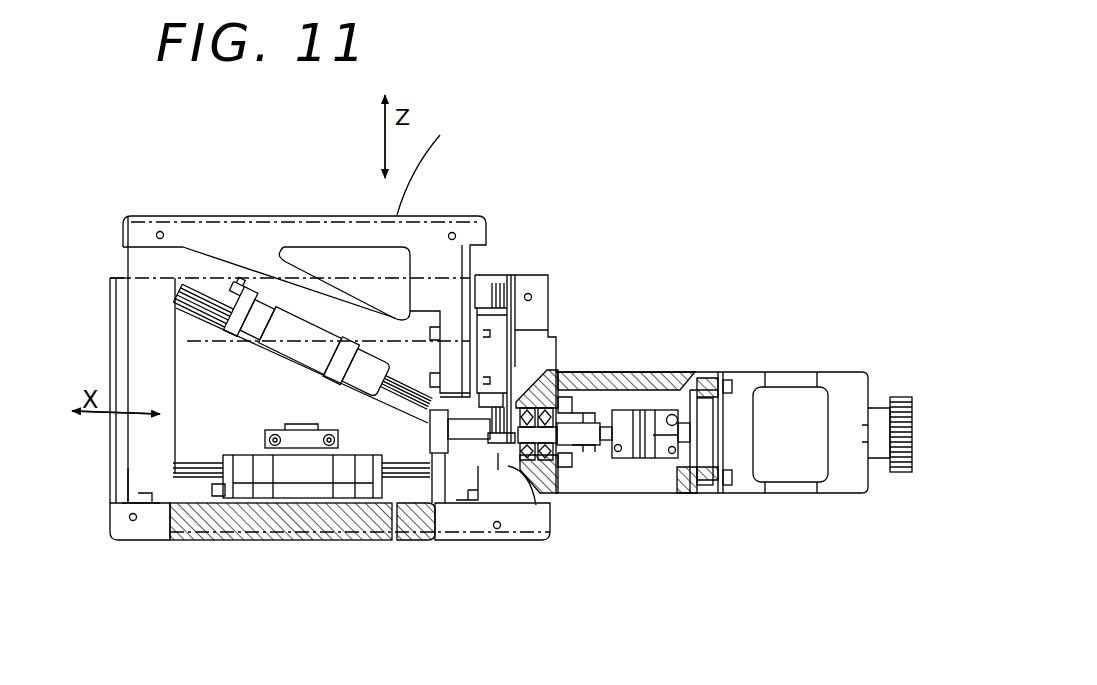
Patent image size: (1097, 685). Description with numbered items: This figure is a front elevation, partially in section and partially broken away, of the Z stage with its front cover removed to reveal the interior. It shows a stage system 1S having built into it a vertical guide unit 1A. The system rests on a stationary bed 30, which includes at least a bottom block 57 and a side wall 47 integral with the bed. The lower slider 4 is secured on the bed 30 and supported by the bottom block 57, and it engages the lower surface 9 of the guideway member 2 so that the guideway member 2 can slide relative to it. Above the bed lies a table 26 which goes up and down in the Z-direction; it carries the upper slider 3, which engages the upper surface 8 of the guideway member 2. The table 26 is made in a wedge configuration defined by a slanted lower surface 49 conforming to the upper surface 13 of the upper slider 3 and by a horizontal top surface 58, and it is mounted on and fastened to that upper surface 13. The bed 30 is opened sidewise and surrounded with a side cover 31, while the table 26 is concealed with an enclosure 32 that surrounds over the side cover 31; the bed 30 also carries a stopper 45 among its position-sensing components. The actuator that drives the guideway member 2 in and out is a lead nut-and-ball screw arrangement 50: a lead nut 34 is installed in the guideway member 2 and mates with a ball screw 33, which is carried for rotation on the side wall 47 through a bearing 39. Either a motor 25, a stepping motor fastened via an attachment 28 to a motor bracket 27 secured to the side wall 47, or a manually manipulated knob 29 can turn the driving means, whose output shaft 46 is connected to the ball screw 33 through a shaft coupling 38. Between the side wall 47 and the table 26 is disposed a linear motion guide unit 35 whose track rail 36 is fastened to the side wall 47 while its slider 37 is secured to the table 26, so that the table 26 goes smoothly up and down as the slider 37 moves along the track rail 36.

The stage system 1S is at (600, 236).
The vertical guide unit 1A is at (315, 383).
The guideway member 2 is at (204, 352).
The upper slider 3 is at (307, 284).
The lower slider 4 is at (293, 487).
The upper surface 8 is at (203, 305).
The lower surface 9 is at (400, 495).
The upper surface 13 is at (238, 286).
The motor 25 is at (797, 400).
The table 26 is at (432, 247).
The motor bracket 27 is at (625, 373).
The attachment 28 is at (707, 383).
The knob 29 is at (902, 407).
The stationary bed 30 is at (142, 530).
The side cover 31 is at (113, 370).
The enclosure 32 is at (122, 247).
The ball screw 33 is at (553, 430).
The lead nut 34 is at (438, 455).
The linear motion guide unit 35 is at (530, 335).
The track rail 36 is at (514, 293).
The slider 37 is at (497, 325).
The shaft coupling 38 is at (650, 413).
The bearing 39 is at (562, 460).
The stopper 45 is at (112, 507).
The output shaft 46 is at (708, 433).
The side wall 47 is at (504, 336).
The lower surface 49 is at (240, 312).
The lead nut-and-ball screw arrangement 50 is at (499, 455).
The bottom block 57 is at (334, 503).
The top surface 58 is at (437, 160).